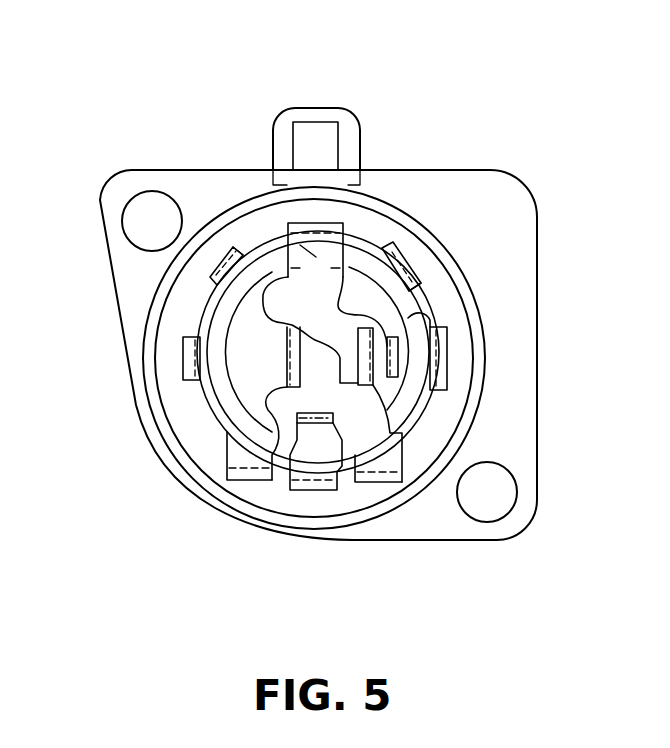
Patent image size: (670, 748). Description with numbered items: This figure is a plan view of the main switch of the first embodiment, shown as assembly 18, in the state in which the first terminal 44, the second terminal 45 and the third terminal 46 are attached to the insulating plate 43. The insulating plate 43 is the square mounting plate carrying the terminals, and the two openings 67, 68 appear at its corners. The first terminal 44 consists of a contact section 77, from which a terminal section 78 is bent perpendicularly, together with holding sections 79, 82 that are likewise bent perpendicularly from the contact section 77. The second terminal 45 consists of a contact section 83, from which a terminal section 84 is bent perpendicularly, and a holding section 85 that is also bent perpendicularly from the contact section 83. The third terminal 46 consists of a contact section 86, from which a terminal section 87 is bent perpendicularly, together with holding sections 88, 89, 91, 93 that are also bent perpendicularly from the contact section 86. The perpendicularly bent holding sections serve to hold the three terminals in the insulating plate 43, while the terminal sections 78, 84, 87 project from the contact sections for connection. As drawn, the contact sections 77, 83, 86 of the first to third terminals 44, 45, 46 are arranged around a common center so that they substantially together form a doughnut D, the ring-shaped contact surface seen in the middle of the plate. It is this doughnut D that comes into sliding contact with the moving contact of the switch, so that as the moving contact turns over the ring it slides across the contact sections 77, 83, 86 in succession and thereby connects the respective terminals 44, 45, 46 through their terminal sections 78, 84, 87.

The receptacle connector 18 is at (152, 100).
The insulating plate 43 is at (117, 315).
The first terminal 44 is at (250, 252).
The second terminal 45 is at (345, 248).
The third terminal 46 is at (422, 282).
The mounting hole 67 is at (127, 197).
The mounting hole 68 is at (505, 490).
The contact section 77 is at (183, 350).
The terminal section 78 is at (293, 362).
The holding section 79 is at (247, 478).
The holding section 82 is at (212, 270).
The contact section 83 is at (308, 257).
The terminal section 84 is at (368, 377).
The holding section 85 is at (312, 227).
The contact section 86 is at (413, 320).
The terminal section 87 is at (400, 352).
The holding section 88 is at (383, 477).
The holding section 89 is at (318, 430).
The holding section 91 is at (298, 445).
The holding section 93 is at (408, 318).
The doughnut D is at (440, 357).